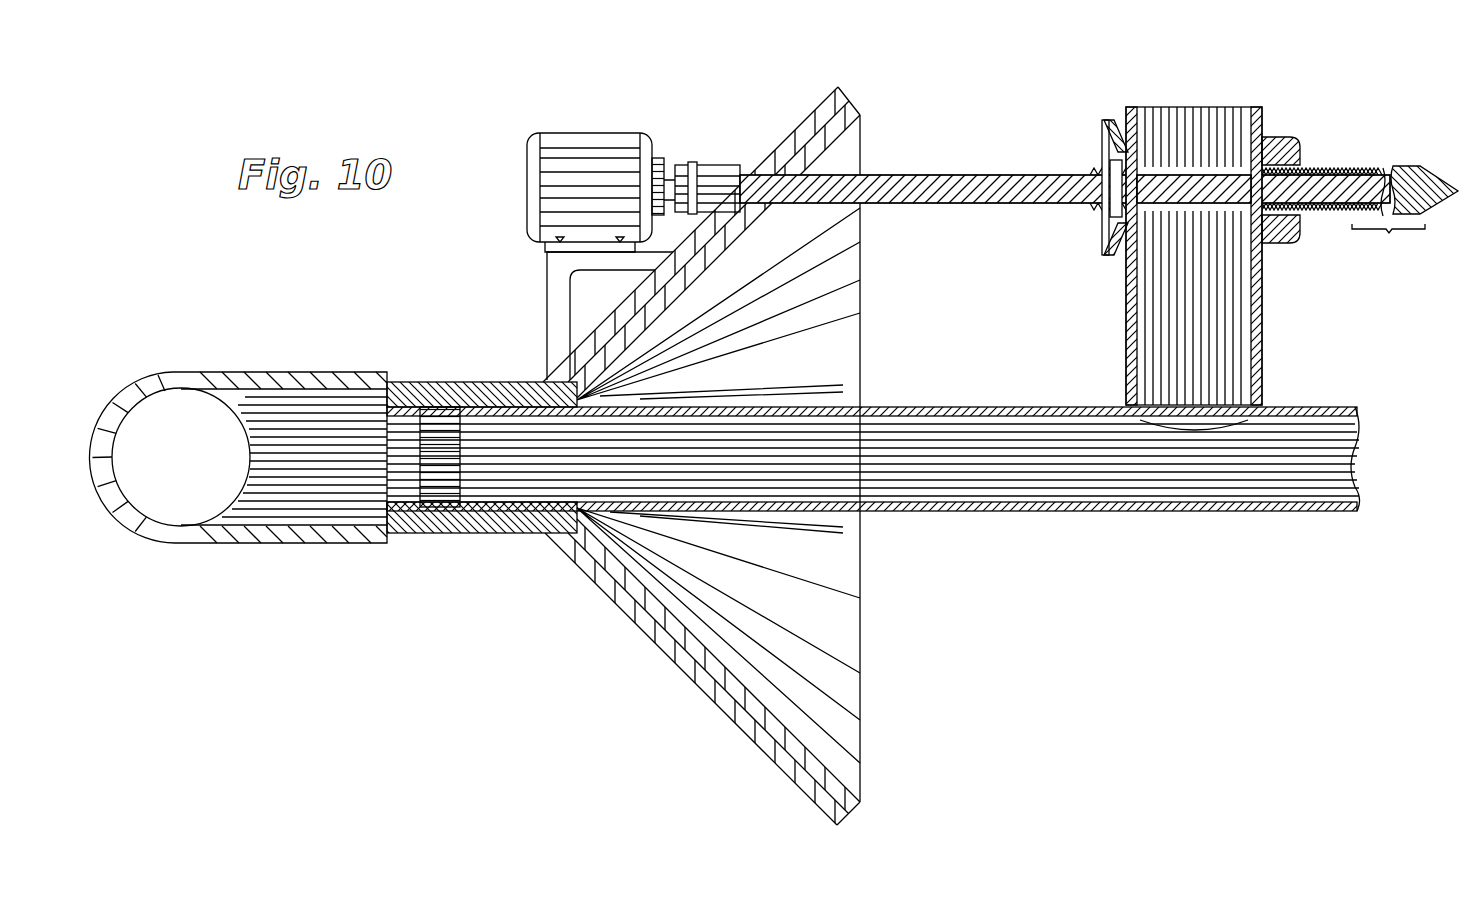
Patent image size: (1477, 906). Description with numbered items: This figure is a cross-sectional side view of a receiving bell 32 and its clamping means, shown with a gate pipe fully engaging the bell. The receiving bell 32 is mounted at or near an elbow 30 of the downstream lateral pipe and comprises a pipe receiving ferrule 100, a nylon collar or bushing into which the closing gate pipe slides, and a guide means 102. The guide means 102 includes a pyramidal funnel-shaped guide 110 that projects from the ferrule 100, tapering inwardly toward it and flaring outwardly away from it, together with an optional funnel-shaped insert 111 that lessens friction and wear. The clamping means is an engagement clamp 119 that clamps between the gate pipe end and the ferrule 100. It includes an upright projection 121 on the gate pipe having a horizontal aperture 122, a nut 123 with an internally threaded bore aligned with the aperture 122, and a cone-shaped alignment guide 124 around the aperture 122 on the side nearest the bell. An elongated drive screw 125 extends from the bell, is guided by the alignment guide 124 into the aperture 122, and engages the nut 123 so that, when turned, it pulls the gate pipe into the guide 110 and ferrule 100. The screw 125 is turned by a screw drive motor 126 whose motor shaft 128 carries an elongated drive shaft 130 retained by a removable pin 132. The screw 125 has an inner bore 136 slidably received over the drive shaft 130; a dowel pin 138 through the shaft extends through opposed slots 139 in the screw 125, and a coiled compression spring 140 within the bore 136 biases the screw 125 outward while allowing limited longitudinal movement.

The elbow 30 is at (258, 380).
The receiving bell 32 is at (543, 574).
The pipe receiving ferrule 100 is at (513, 385).
The guide means 102 is at (757, 456).
The funnel-shaped guide 110 is at (752, 737).
The insert 111 is at (858, 812).
The engagement clamp 119 is at (1018, 137).
The upright projection 121 is at (1231, 246).
The aperture 122 is at (1210, 219).
The nut 123 is at (1278, 140).
The cone-shaped alignment guide 124 is at (1110, 128).
The drive screw 125 is at (1360, 189).
The screw drive motor 126 is at (566, 150).
The motor shaft 128 is at (733, 162).
The elongated drive shaft 130 is at (945, 202).
The removable pin 132 is at (703, 165).
The inner bore 136 is at (1306, 163).
The dowel pin 138 is at (1108, 178).
The opposed slots 139 is at (1203, 160).
The coiled compression spring 140 is at (1331, 210).